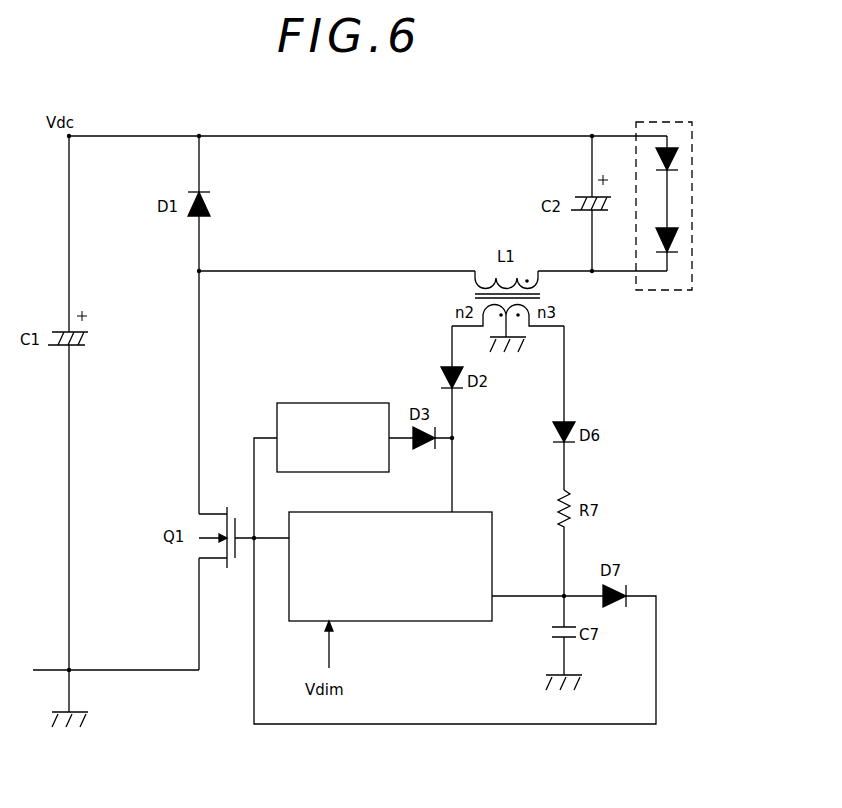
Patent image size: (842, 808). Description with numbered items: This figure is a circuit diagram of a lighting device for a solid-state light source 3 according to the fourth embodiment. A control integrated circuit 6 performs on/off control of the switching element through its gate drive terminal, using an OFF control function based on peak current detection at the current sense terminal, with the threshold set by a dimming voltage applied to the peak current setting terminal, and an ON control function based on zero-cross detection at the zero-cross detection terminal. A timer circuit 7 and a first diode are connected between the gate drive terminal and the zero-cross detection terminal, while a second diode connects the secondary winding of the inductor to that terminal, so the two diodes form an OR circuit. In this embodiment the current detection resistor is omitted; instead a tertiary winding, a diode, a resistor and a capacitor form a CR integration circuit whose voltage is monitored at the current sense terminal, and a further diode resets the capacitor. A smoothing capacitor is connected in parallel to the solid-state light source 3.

The solid-state light source 3 is at (650, 120).
The control integrated circuit 6 is at (413, 512).
The timer circuit 7 is at (296, 403).